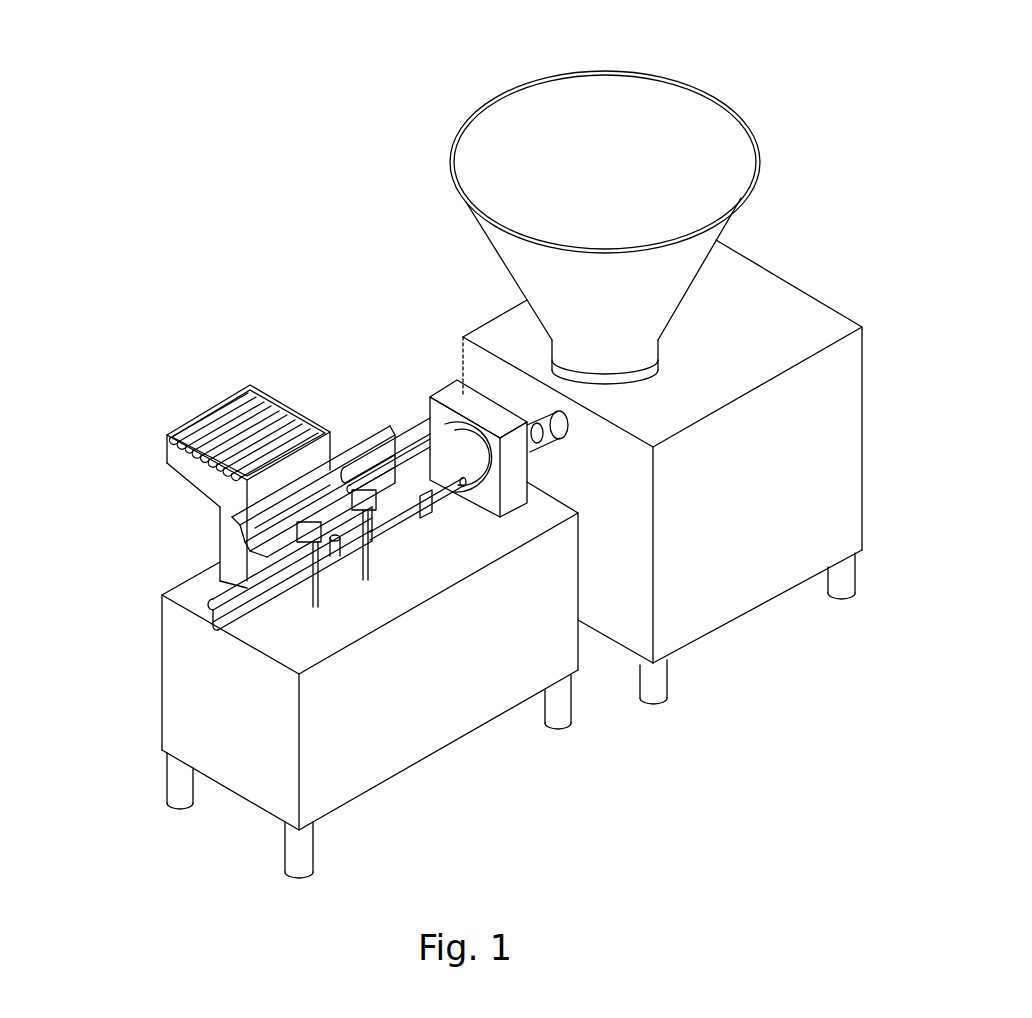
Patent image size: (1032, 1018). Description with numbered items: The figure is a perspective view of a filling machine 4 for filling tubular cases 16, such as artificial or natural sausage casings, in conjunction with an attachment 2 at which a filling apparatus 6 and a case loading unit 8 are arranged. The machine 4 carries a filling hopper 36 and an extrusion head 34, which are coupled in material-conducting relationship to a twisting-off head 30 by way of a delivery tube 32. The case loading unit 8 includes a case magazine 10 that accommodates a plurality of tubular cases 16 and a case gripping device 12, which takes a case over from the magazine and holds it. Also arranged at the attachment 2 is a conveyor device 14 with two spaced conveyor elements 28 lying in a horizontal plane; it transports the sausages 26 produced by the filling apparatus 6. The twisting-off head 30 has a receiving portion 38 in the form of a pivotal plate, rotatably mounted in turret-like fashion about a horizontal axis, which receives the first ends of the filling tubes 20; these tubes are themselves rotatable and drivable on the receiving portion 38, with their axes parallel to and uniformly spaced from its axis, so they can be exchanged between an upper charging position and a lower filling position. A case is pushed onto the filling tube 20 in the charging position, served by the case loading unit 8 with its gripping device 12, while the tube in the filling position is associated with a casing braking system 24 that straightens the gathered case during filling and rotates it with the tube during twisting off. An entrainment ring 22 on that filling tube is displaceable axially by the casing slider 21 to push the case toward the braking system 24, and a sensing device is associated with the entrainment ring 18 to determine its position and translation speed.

The attachment 2 is at (140, 326).
The filling machine 4 is at (800, 245).
The filling apparatus 6 is at (370, 680).
The case loading unit 8 is at (301, 481).
The case magazine 10 is at (234, 407).
The case gripping device 12 is at (272, 538).
The conveyor device 14 is at (208, 590).
The tubular cases 16 is at (274, 412).
The entrainment ring 18 is at (400, 477).
The filling tube 20 is at (422, 462).
The casing slider 21 is at (481, 698).
The entrainment ring 22 is at (474, 667).
The casing braking system 24 is at (398, 686).
The sausages 26 is at (208, 613).
The conveyor element 28 is at (213, 622).
The twisting-off head 30 is at (452, 397).
The delivery tube 32 is at (533, 435).
The extrusion head 34 is at (553, 423).
The filling hopper 36 is at (567, 130).
The receiving portion 38 is at (551, 630).